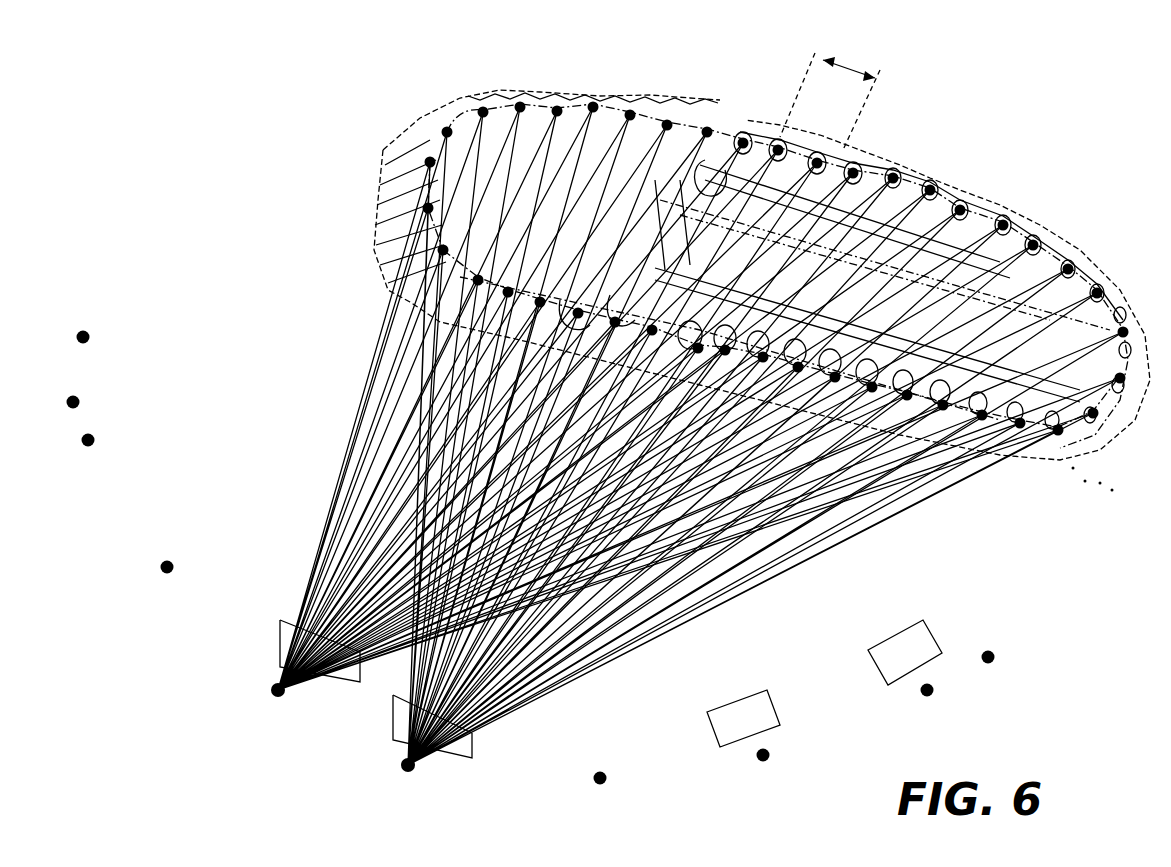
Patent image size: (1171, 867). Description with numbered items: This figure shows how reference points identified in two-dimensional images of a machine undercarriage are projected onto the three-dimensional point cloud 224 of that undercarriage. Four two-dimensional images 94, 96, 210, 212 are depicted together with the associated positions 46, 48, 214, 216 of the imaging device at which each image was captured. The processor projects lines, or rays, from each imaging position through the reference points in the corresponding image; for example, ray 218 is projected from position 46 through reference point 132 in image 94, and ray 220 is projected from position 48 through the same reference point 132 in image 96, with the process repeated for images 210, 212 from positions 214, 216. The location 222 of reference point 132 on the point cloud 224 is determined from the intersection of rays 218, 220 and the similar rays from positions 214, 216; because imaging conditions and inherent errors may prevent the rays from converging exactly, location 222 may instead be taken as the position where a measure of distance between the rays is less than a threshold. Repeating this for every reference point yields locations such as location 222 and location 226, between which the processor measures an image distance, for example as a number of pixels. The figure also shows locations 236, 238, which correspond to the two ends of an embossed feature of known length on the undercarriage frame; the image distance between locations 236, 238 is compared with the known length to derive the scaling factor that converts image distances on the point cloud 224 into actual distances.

The position of imaging device 46 is at (276, 694).
The position of imaging device 48 is at (405, 768).
The 2D image 94 is at (280, 621).
The 2D image 96 is at (473, 748).
The reference point 132 is at (297, 623).
The 2D image 210 is at (739, 697).
The 2D image 212 is at (898, 632).
The position of imaging device 214 is at (765, 762).
The position of imaging device 216 is at (930, 698).
The ray 218 is at (376, 390).
The ray 220 is at (434, 136).
The location of reference point 222 is at (452, 110).
The 3D point cloud 224 is at (858, 150).
The location of reference point 226 is at (487, 86).
The location of reference point 236 is at (727, 228).
The location of reference point 238 is at (797, 316).